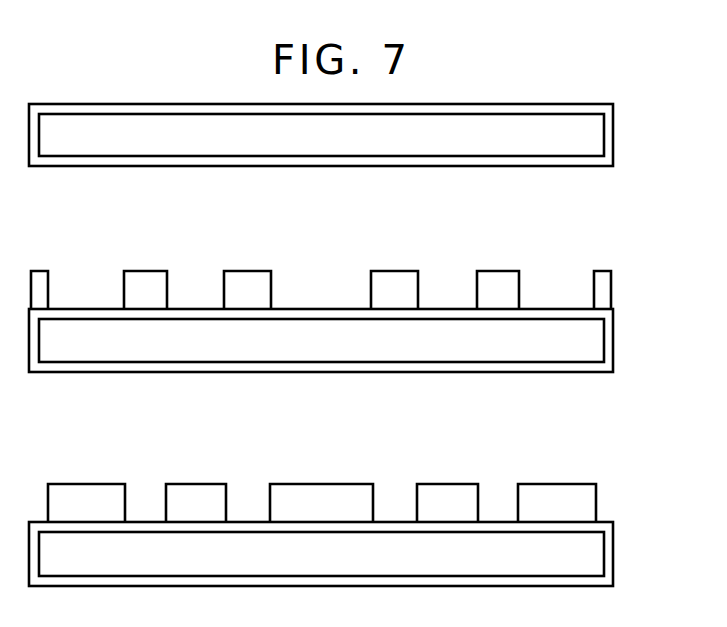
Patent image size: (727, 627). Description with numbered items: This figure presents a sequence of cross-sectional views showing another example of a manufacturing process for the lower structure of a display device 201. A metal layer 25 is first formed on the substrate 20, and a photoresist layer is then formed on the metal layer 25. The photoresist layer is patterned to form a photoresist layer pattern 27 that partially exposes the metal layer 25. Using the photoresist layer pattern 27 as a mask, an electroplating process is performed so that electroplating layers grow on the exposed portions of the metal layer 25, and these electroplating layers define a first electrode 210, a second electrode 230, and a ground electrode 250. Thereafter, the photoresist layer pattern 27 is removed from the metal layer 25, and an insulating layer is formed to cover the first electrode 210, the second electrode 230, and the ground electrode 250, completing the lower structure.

The substrate 20 is at (593, 142).
The metal layer 25 is at (609, 113).
The photoresist layer pattern 27 is at (605, 284).
The display device 201 is at (603, 479).
The first electrode 210 is at (322, 492).
The second electrode 230 is at (196, 492).
The ground electrode 250 is at (88, 492).